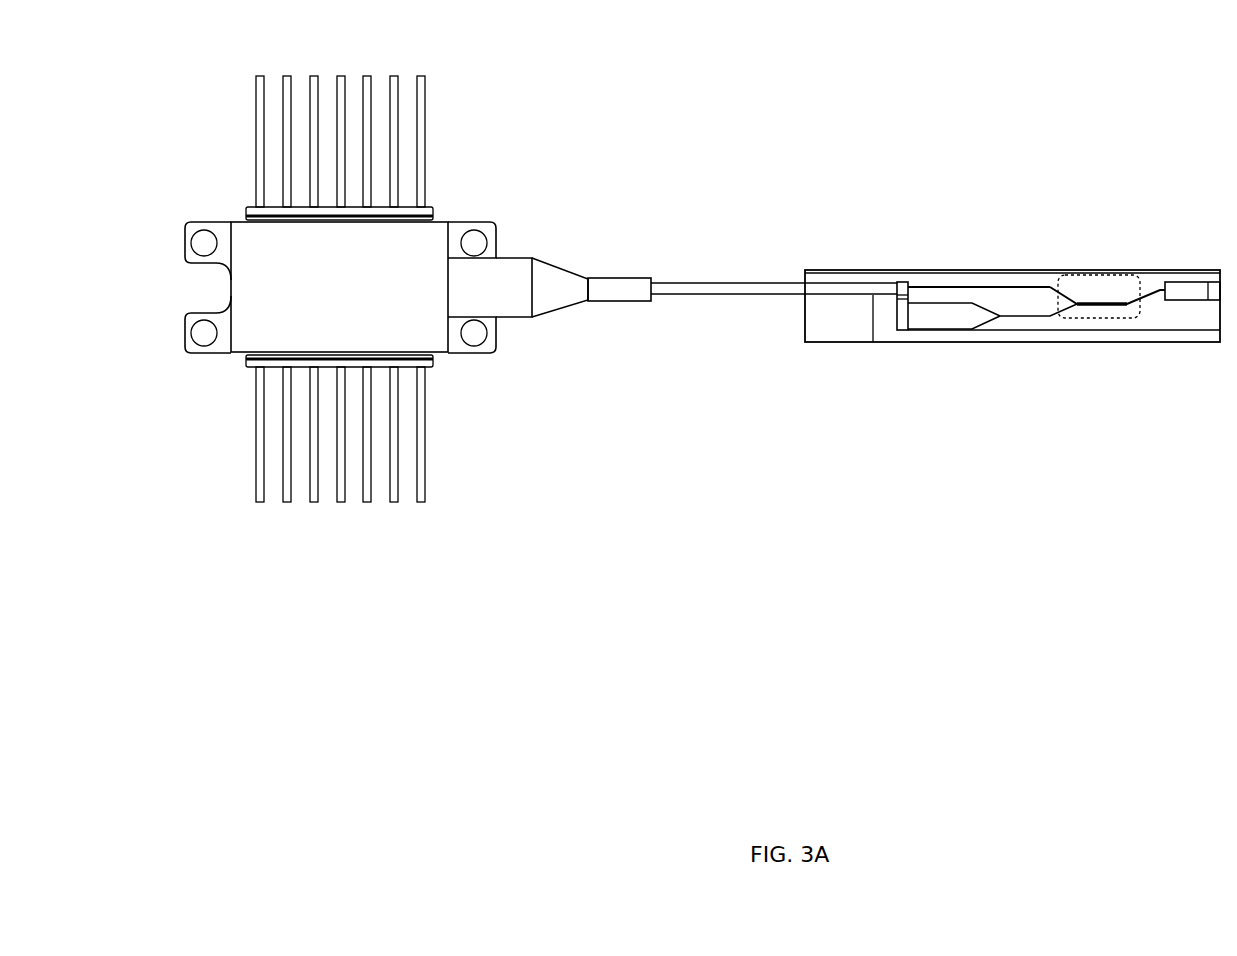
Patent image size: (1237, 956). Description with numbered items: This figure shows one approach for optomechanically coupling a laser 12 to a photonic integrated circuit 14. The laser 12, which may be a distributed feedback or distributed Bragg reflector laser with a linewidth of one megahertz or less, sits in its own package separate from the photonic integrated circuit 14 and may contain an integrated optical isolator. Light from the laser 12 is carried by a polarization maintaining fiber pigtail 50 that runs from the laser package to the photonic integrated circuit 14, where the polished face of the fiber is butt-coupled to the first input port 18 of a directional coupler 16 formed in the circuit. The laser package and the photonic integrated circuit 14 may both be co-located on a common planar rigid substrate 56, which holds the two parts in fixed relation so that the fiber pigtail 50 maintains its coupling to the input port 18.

The laser 12 is at (342, 270).
The photonic integrated circuit 14 is at (1153, 317).
The directional coupler 16 is at (1100, 280).
The first input port 18 is at (908, 278).
The polarization maintaining fiber pigtail 50 is at (693, 288).
The planar rigid substrate 56 is at (926, 366).